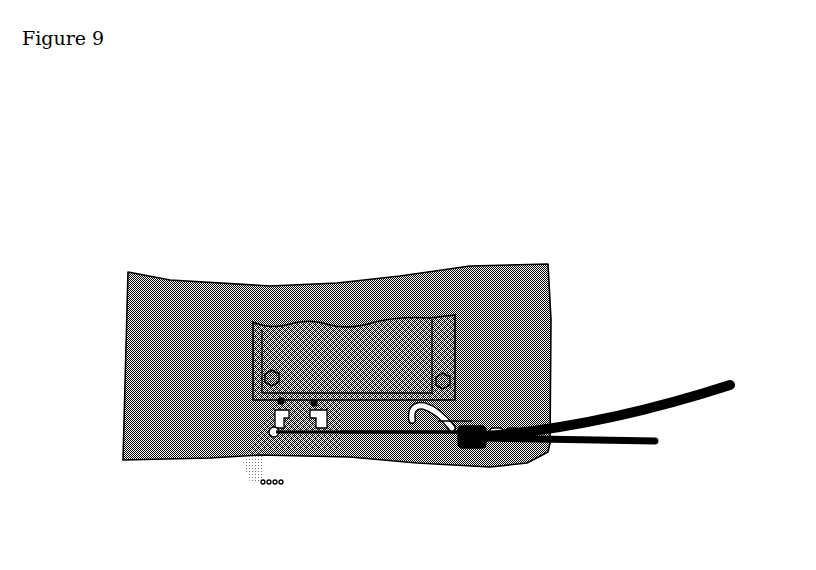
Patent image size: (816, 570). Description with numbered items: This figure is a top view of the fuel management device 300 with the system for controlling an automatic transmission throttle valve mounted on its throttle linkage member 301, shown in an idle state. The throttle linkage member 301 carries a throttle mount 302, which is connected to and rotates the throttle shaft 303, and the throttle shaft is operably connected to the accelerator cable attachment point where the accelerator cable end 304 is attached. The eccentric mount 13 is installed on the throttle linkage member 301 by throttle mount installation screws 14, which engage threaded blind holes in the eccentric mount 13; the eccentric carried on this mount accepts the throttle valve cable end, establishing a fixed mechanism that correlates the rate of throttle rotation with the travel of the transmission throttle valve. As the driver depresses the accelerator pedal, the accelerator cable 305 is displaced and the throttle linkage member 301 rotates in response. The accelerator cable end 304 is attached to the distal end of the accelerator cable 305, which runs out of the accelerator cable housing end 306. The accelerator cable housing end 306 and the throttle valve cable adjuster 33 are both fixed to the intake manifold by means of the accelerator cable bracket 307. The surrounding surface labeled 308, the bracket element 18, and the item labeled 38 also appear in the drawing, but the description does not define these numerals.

The fuel tank body 308 is at (233, 342).
The fuel management device 300 is at (410, 338).
The accelerator cable end 304 is at (266, 435).
The throttle mount 302 is at (283, 400).
The throttle shaft 303 is at (300, 398).
The throttle mount installation screws 14 is at (283, 400).
The right bracket 18 is at (315, 407).
The eccentric mount 13 is at (270, 426).
The throttle linkage member 301 is at (296, 434).
The accelerator cable 305 is at (377, 436).
The accelerator cable bracket 307 is at (453, 420).
The accelerator cable housing end 306 is at (485, 427).
The throttle valve cable adjuster 33 is at (608, 390).
The rod end 38 is at (432, 438).